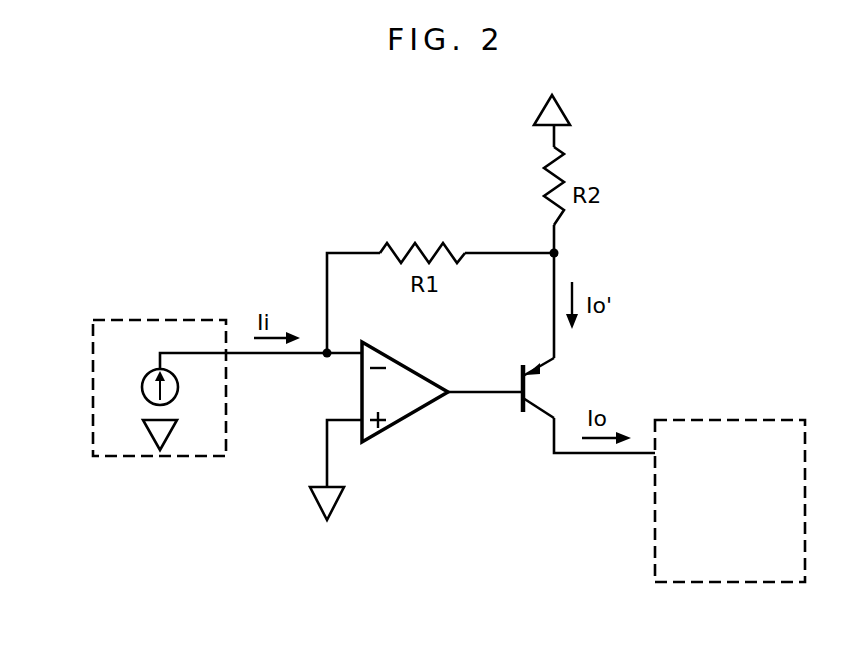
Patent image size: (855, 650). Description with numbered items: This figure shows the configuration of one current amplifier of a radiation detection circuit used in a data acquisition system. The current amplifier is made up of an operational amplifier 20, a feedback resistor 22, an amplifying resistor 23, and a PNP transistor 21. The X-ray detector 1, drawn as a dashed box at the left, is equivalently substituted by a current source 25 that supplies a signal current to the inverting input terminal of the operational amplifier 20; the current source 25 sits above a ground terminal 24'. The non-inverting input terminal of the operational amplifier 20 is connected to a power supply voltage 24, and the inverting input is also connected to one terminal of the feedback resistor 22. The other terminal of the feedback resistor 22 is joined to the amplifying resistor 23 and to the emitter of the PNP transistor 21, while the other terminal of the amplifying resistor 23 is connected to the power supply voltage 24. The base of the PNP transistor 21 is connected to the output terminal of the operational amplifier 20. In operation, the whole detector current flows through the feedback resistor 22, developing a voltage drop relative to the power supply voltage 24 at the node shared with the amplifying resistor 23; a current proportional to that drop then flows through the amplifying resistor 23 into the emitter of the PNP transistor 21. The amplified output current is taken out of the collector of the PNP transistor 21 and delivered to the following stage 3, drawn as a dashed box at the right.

The X-ray detector 1 is at (155, 319).
The load circuit 3 is at (718, 420).
The operational amplifier 20 is at (405, 418).
The PNP transistor 21 is at (545, 413).
The feedback resistor 22 is at (433, 246).
The amplifying resistor 23 is at (560, 165).
The power supply voltage 24 is at (473, 336).
The ground terminal 24' is at (143, 467).
The current source 25 is at (142, 389).